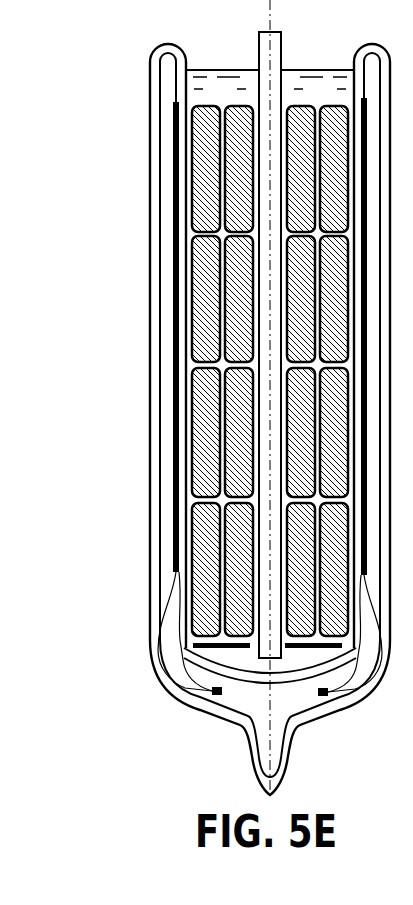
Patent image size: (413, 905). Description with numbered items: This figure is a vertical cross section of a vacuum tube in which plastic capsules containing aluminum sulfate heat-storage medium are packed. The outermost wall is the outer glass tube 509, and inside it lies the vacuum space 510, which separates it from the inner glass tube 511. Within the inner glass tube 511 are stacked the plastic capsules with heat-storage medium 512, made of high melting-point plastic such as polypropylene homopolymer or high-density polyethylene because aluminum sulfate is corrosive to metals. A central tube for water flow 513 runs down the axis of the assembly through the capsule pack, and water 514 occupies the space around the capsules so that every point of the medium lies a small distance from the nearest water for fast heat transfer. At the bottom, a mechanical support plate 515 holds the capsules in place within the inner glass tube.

The outer glass tube 509 is at (150, 110).
The vacuum space 510 is at (163, 180).
The inner glass tube 511 is at (183, 265).
The plastic capsules with heat-storage medium 512 is at (207, 428).
The central tube for water flow 513 is at (270, 578).
The water 514 is at (228, 100).
The mechanical support plate 515 is at (187, 641).